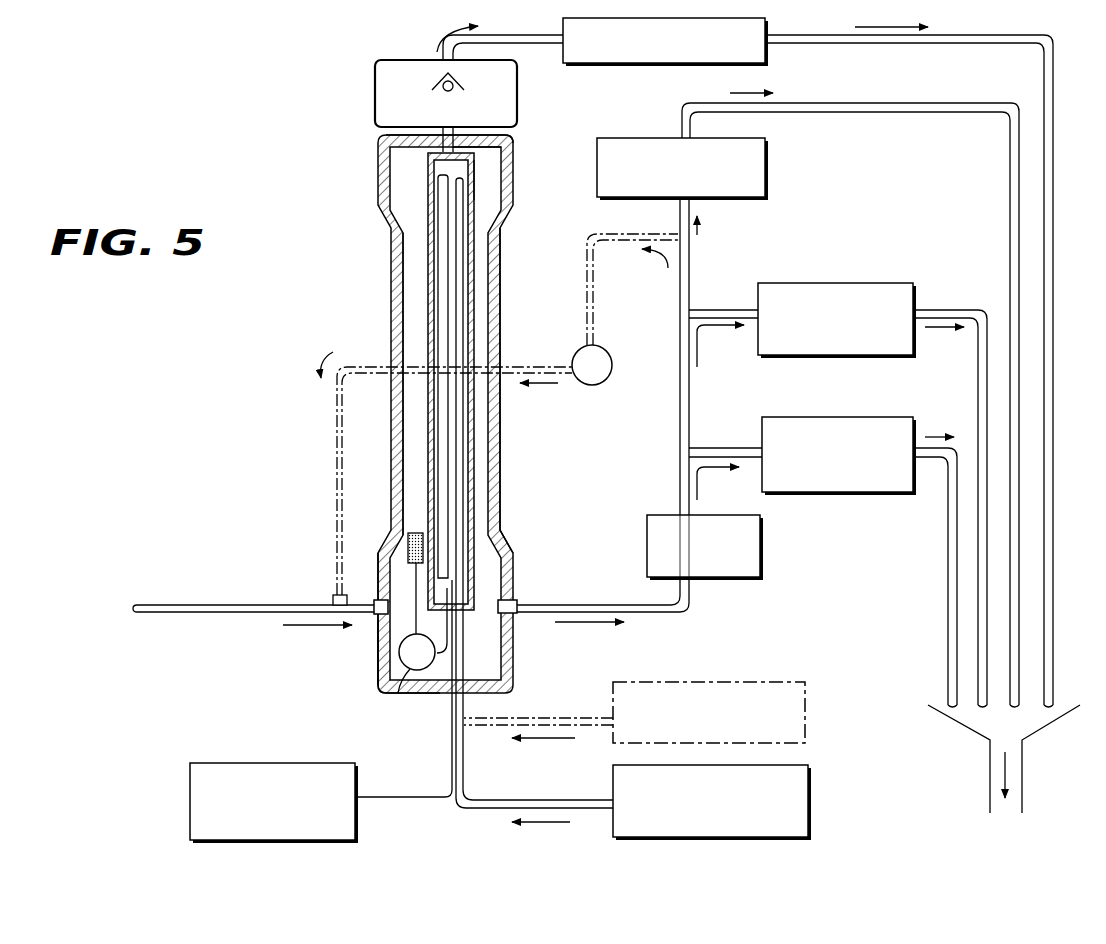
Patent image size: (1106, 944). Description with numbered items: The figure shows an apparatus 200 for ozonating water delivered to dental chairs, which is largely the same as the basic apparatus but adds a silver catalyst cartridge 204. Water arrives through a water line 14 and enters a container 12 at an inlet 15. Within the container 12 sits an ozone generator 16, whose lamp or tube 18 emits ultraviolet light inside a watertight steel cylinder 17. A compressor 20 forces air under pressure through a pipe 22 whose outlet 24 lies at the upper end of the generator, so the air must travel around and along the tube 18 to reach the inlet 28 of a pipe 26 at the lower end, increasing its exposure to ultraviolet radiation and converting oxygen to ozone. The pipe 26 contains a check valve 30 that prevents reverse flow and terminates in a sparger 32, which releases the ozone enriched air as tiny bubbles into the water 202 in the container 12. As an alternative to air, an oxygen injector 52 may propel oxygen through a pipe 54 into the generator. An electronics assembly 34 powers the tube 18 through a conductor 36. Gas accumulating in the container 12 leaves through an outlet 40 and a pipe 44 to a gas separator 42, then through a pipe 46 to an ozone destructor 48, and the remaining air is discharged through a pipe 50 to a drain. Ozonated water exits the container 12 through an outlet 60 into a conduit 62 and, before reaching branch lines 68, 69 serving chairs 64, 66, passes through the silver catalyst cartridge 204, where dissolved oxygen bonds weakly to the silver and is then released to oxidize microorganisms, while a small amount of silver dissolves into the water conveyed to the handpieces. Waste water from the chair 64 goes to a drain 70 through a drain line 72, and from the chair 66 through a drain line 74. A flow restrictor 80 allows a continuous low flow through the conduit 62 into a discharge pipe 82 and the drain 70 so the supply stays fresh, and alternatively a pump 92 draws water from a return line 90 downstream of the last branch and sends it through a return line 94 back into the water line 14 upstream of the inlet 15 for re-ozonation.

The container 12 is at (500, 485).
The water line 14 is at (190, 613).
The inlet 15 is at (370, 615).
The ozone generator 16 is at (503, 532).
The watertight steel cylinder 17 is at (478, 423).
The lamp or tube 18 is at (442, 258).
The compressor 20 is at (810, 766).
The pipe 22 is at (530, 800).
The outlet 24 is at (478, 180).
The pipe 26 is at (388, 576).
The inlet 28 is at (384, 640).
The check valve 30 is at (403, 693).
The sparger 32 is at (396, 528).
The electronics assembly 34 is at (300, 763).
The conductor 36 is at (425, 797).
The outlet 40 is at (386, 152).
The gas separator 42 is at (518, 92).
The pipe 44 is at (500, 148).
The pipe 46 is at (540, 45).
The ozone destructor 48 is at (597, 64).
The pipe 50 is at (855, 44).
The oxygen injector 52 is at (760, 682).
The pipe 54 is at (574, 718).
The outlet 60 is at (517, 614).
The conduit 62 is at (660, 614).
The chair 64 is at (833, 417).
The chair 66 is at (840, 283).
The branch line 68 is at (738, 448).
The branch line 69 is at (738, 310).
The drain 70 is at (990, 793).
The drain line 72 is at (948, 655).
The drain line 74 is at (977, 381).
The flow restrictor 80 is at (765, 150).
The discharge pipe 82 is at (848, 113).
The return line 90 is at (607, 238).
The pump 92 is at (609, 352).
The return line 94 is at (336, 448).
The apparatus 200 is at (522, 462).
The water 202 is at (414, 326).
The silver catalyst cartridge 204 is at (760, 540).